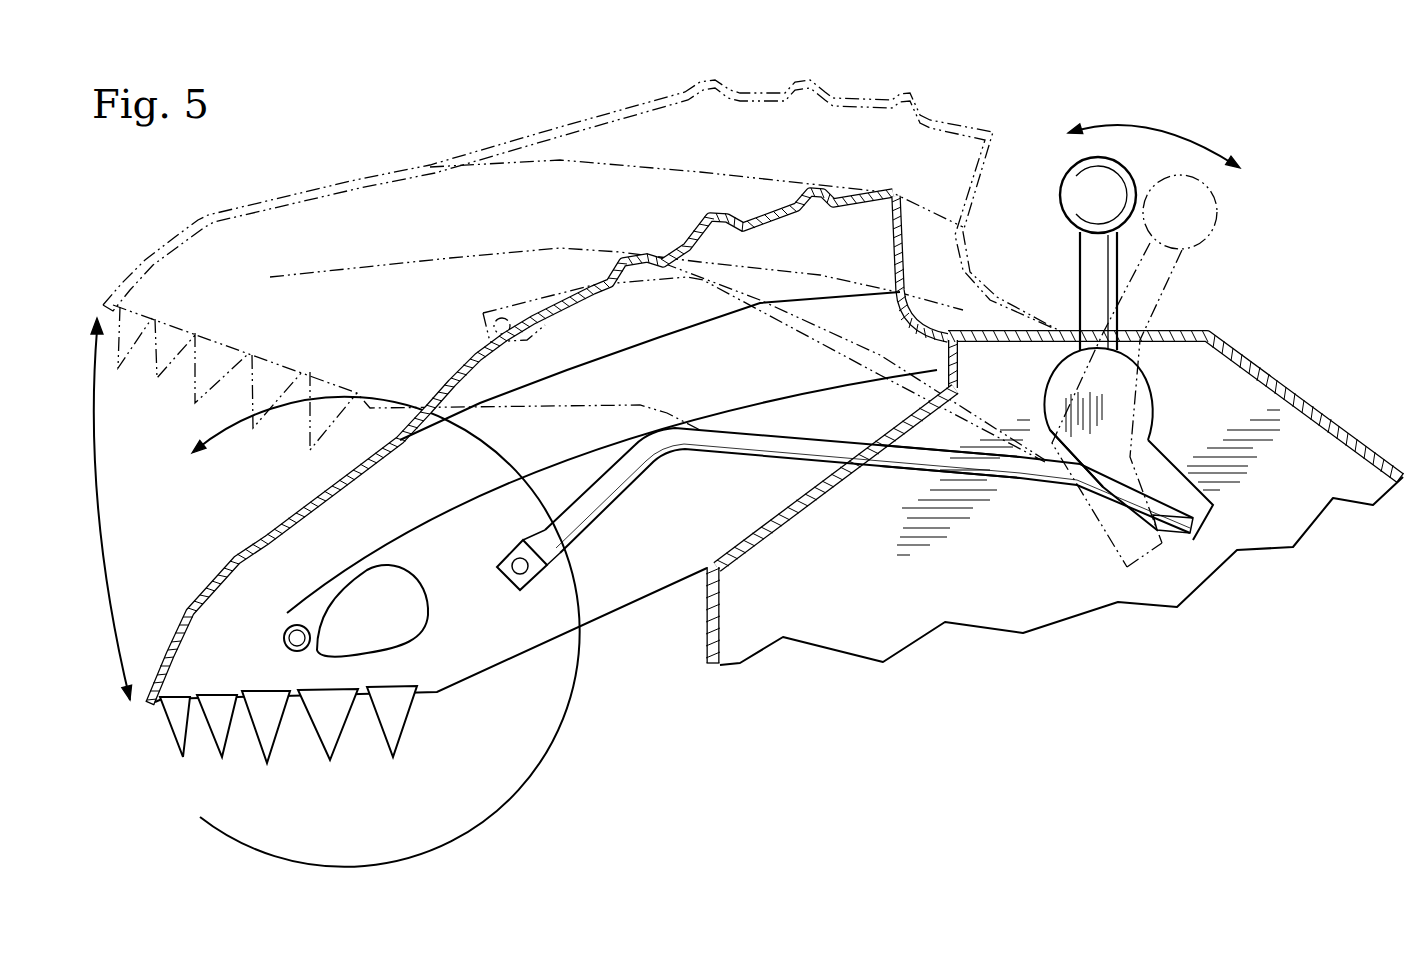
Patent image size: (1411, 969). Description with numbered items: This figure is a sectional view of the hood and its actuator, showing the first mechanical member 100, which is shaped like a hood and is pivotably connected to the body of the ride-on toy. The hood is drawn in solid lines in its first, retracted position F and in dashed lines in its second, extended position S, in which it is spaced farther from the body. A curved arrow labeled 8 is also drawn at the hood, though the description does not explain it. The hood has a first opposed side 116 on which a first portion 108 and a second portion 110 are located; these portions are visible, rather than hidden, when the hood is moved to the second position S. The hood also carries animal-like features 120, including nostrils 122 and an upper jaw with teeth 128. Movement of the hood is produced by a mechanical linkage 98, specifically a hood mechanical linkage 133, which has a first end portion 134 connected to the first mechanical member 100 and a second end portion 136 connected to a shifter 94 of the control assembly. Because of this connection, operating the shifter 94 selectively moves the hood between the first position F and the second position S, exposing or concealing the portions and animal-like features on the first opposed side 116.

The second position S is at (313, 188).
The first position F is at (178, 675).
The section view indicator 8 is at (380, 632).
The shifter 94 is at (1090, 273).
The mechanical linkage 98 is at (727, 441).
The first mechanical member 100 is at (546, 551).
The first portion 108 is at (350, 494).
The second portion 110 is at (218, 737).
The first opposed side 116 is at (275, 553).
The animal-like features 120 is at (265, 740).
The nostrils 122 is at (420, 613).
The teeth 128 is at (330, 740).
The hood mechanical linkage 133 is at (890, 457).
The first end portion 134 is at (545, 542).
The second end portion 136 is at (1113, 500).